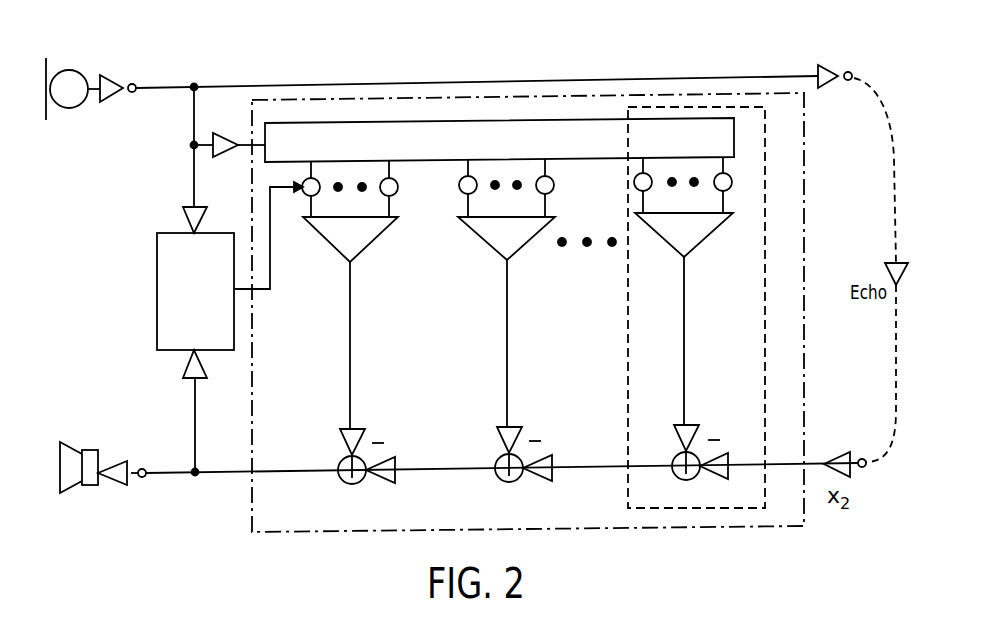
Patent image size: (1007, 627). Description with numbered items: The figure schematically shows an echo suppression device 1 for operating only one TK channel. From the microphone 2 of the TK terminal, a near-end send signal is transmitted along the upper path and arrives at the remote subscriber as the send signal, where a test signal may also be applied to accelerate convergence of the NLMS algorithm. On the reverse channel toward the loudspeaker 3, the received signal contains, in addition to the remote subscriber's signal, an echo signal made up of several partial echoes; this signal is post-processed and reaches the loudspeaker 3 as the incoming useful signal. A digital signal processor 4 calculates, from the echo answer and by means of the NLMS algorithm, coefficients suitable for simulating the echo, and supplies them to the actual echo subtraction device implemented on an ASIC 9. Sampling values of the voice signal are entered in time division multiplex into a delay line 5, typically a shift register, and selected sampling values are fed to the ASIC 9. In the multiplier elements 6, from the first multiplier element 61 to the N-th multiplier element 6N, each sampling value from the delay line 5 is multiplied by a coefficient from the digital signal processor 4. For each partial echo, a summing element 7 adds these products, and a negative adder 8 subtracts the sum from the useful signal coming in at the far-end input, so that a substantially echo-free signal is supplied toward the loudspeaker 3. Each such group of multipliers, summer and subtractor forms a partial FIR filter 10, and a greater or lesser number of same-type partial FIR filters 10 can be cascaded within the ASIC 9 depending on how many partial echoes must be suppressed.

The echo suppression device 1 is at (262, 74).
The microphone 2 is at (70, 70).
The loudspeaker 3 is at (70, 488).
The digital signal processor 4 is at (157, 297).
The delay line 5 is at (419, 161).
The multiplier elements 6 is at (524, 205).
The first multiplier element 61 is at (311, 208).
The N-th multiplier element 6N is at (398, 187).
The summing element 7 is at (339, 251).
The negative adder 8 is at (342, 480).
The ASIC 9 is at (804, 175).
The partial FIR filter 10 is at (765, 240).